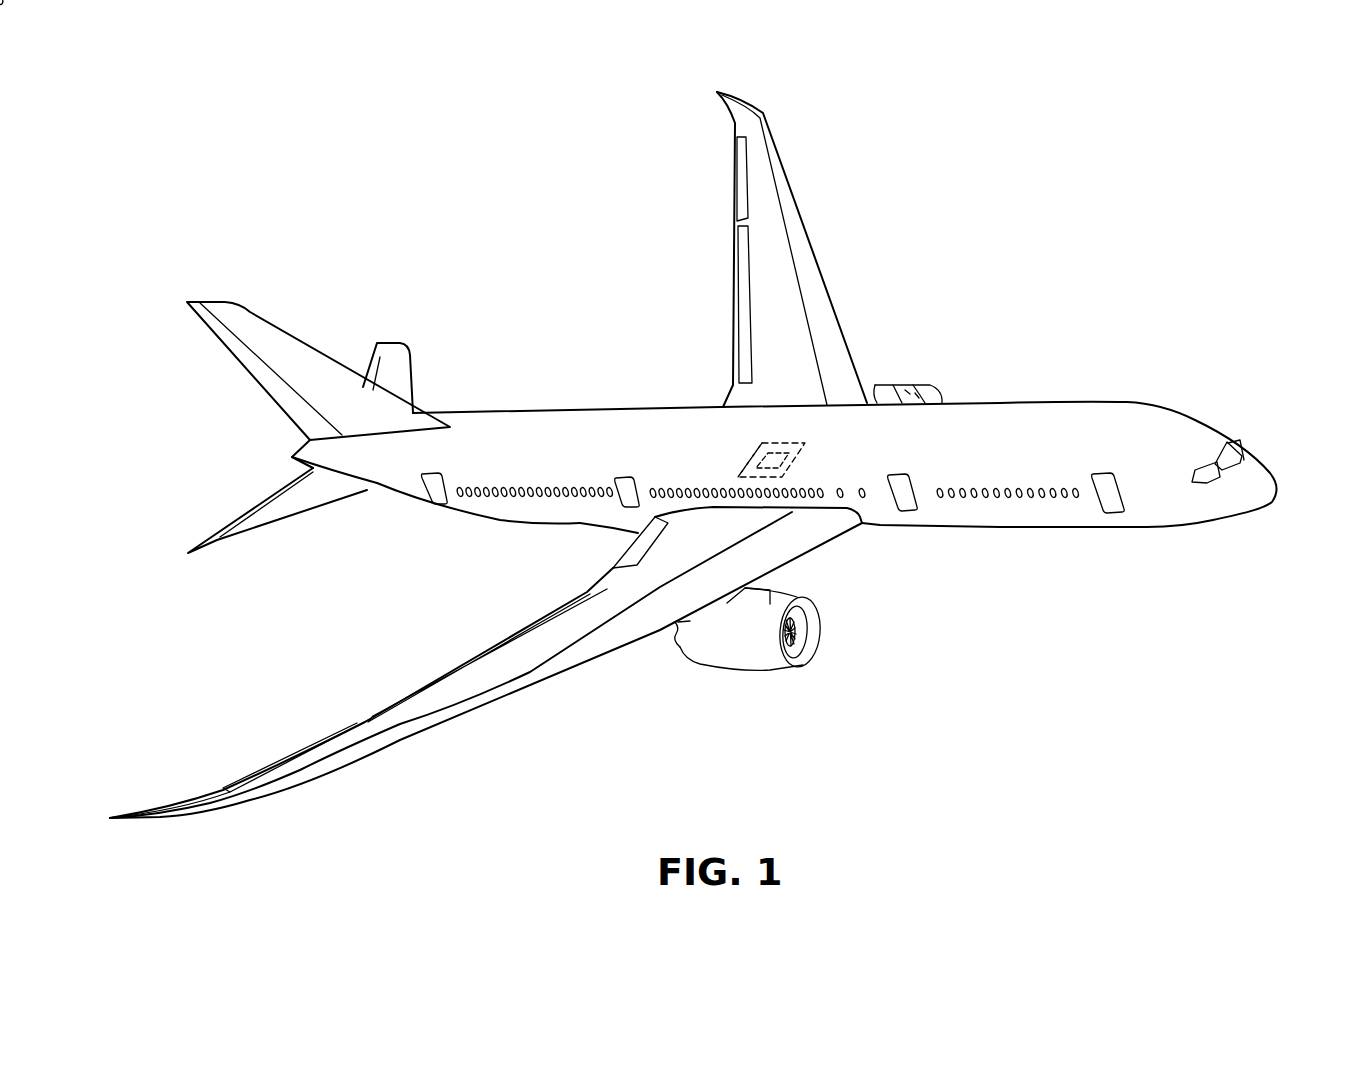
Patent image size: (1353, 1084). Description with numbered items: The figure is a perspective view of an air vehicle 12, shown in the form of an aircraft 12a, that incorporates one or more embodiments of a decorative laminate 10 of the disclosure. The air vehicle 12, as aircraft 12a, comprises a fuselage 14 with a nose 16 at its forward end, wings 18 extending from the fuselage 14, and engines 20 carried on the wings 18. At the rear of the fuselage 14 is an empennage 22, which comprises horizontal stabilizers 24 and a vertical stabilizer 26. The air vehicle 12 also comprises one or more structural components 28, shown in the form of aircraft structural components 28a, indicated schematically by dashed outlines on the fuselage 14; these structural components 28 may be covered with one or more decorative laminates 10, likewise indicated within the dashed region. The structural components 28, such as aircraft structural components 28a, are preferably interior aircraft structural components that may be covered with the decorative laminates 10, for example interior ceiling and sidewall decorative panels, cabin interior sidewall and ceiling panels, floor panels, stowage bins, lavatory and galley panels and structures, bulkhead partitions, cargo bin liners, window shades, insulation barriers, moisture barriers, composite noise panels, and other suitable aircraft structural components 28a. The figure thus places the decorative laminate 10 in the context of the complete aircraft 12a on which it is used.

The decorative laminate 10 is at (790, 460).
The air vehicle 12 is at (1033, 210).
The aircraft 12a is at (1080, 401).
The fuselage 14 is at (1005, 413).
The nose 16 is at (1253, 495).
The wings 18 is at (778, 170).
The engines 20 is at (912, 392).
The empennage 22 is at (172, 323).
The horizontal stabilizers 24 is at (402, 375).
The vertical stabilizer 26 is at (277, 353).
The structural components 28 is at (753, 447).
The aircraft structural components 28a is at (750, 460).